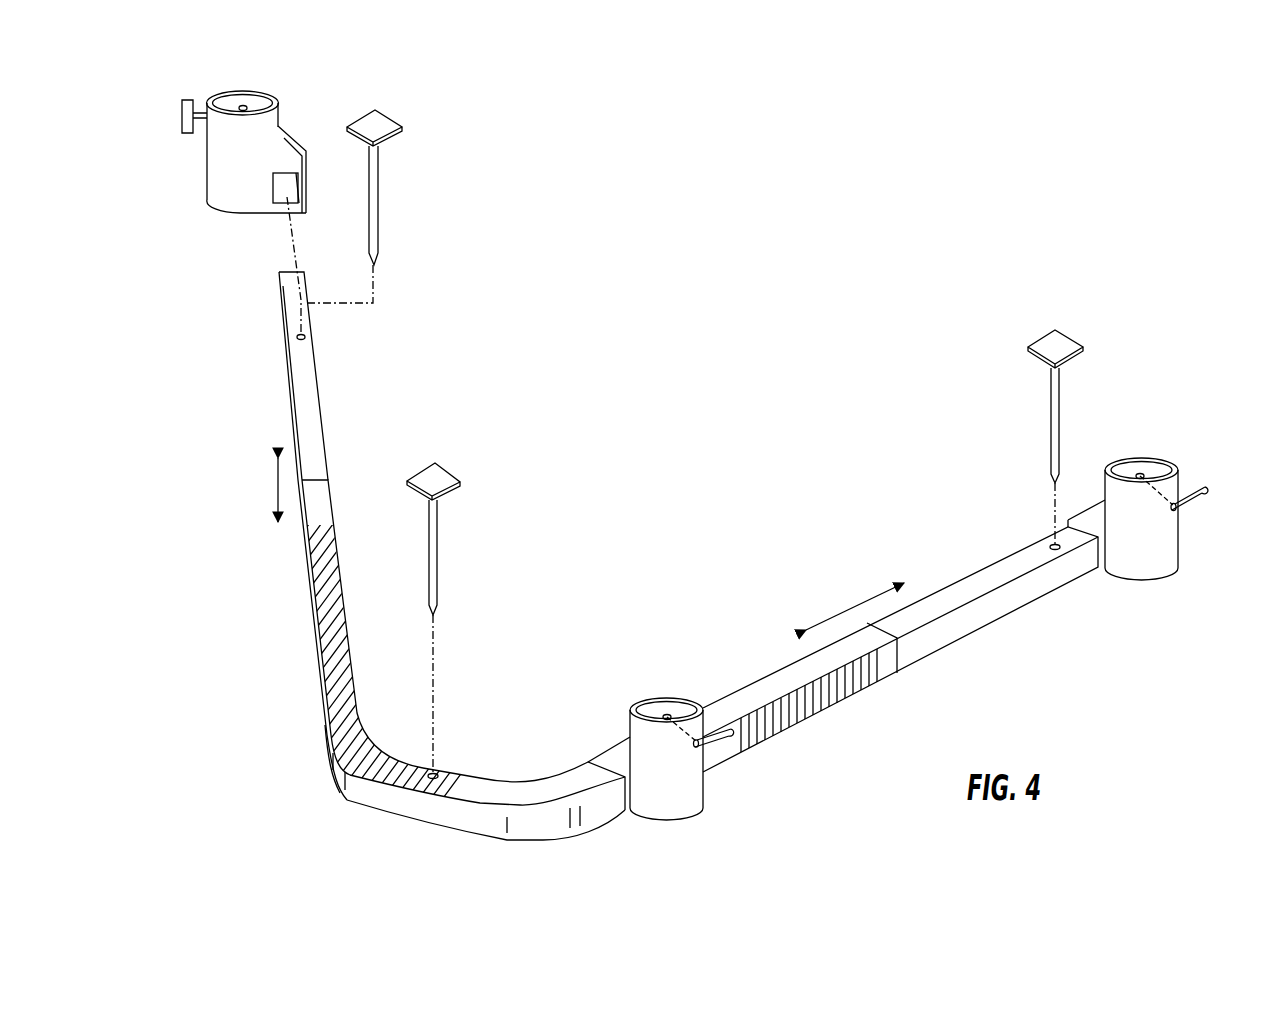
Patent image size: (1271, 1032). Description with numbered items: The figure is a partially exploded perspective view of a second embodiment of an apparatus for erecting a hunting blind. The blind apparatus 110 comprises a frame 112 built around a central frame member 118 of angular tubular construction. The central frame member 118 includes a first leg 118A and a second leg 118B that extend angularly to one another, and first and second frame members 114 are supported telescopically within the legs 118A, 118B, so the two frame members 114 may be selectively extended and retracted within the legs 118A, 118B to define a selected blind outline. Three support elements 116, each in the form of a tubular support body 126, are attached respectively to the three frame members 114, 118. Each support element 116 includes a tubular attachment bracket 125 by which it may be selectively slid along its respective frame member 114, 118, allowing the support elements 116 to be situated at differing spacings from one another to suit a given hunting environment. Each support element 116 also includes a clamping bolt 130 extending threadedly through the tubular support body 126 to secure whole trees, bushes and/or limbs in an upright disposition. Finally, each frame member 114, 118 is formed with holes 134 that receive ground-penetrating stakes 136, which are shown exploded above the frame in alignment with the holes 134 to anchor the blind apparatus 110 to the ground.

The blind apparatus 110 is at (614, 464).
The frame 112 is at (328, 768).
The frame member 114 is at (286, 370).
The support element 116 is at (680, 487).
The central frame member 118 is at (334, 690).
The first leg 118A is at (307, 622).
The second leg 118B is at (794, 734).
The tubular attachment bracket 125 is at (298, 141).
The tubular support body 126 is at (220, 183).
The clamping bolt 130 is at (243, 106).
The hole 134 is at (438, 774).
The ground-penetrating stake 136 is at (378, 193).